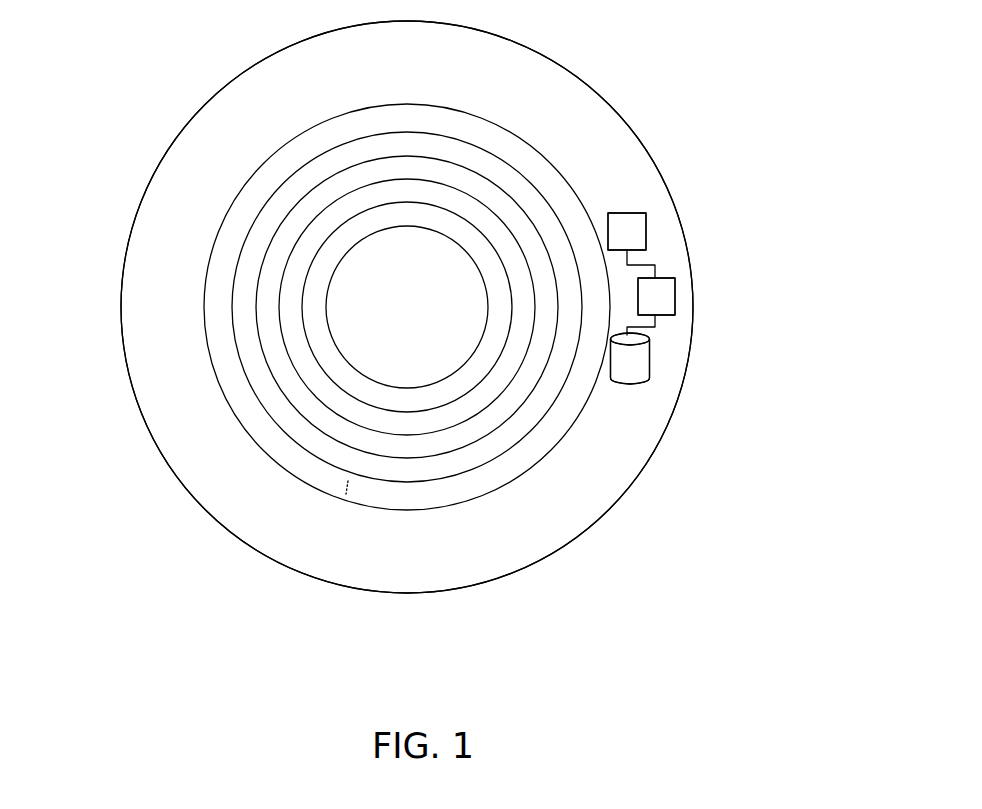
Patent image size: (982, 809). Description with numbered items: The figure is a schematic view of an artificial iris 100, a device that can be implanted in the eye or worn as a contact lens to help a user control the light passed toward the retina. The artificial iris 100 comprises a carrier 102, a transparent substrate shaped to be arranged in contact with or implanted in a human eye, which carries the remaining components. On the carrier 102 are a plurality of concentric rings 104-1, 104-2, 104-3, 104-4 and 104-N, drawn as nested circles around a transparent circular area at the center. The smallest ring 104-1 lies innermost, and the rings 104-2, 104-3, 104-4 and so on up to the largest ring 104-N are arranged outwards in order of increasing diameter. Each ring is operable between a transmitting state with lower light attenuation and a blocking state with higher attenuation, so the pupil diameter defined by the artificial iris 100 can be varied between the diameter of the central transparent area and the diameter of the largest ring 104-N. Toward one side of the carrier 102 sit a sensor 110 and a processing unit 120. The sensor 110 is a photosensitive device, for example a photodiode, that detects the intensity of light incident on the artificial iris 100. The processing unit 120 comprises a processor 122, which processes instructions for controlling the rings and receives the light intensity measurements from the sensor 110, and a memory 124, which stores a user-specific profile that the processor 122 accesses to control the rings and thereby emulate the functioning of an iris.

The artificial iris 100 is at (645, 80).
The carrier 102 is at (418, 558).
The ring 104-1 is at (310, 297).
The ring 104-2 is at (292, 342).
The ring 104-3 is at (300, 400).
The ring 104-4 is at (322, 450).
The ring 104-N is at (392, 498).
The sensor 110 is at (633, 238).
The processing unit 120 is at (680, 343).
The processor 122 is at (662, 291).
The memory 124 is at (632, 378).